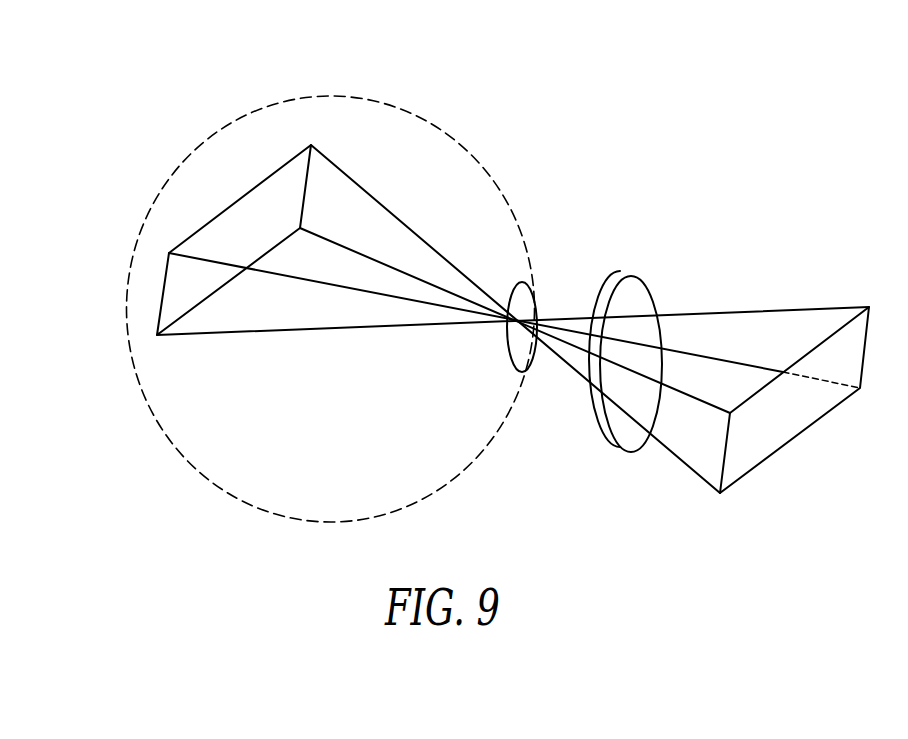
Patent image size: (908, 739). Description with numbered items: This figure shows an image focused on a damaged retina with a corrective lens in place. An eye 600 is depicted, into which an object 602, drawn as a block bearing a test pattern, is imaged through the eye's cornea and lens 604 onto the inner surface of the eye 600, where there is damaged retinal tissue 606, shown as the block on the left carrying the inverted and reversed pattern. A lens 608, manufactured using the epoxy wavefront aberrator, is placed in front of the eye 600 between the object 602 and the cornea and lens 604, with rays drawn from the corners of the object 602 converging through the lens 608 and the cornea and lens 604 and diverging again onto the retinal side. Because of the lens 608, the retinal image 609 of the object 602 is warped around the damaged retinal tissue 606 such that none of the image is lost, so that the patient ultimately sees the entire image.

The eye 600 is at (566, 135).
The object 602 is at (803, 417).
The cornea and lens 604 is at (523, 303).
The damaged retinal tissue 606 is at (236, 222).
The lens 608 is at (621, 452).
The retinal image 609 is at (272, 188).